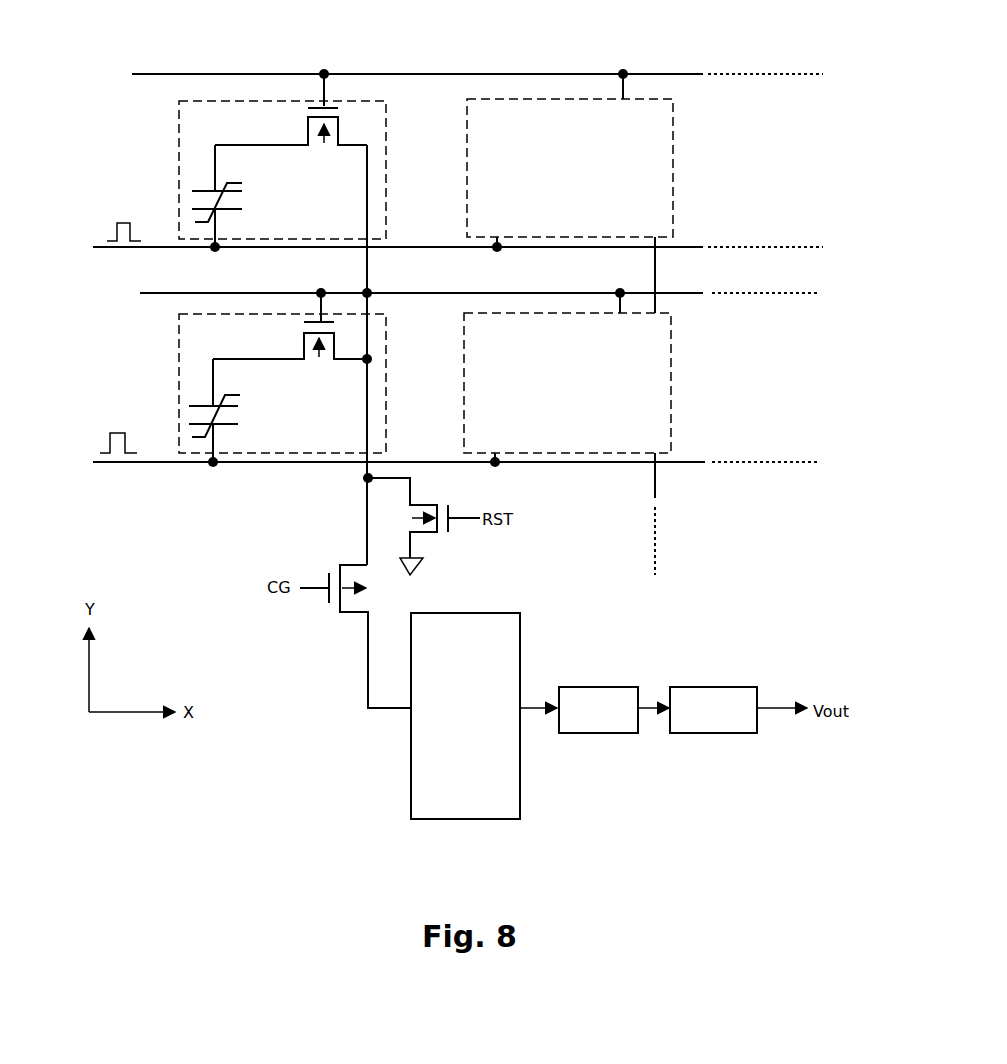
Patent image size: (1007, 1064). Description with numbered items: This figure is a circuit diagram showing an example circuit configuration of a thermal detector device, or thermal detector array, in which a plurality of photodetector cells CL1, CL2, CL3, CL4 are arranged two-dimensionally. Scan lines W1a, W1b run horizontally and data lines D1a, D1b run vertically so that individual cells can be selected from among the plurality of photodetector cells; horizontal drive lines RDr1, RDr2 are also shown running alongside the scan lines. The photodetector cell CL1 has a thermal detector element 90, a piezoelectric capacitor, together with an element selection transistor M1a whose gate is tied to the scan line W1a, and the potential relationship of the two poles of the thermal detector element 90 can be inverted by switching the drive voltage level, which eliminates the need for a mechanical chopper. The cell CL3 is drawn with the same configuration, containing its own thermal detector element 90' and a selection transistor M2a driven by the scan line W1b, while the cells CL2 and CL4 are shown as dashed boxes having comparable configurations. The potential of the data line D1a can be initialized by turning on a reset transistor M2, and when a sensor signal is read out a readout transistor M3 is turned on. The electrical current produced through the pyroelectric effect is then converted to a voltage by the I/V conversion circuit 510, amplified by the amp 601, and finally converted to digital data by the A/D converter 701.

The scan line W1a is at (459, 74).
The scan line W1b is at (461, 292).
The read drive line RDr1 is at (434, 239).
The read drive line RDr2 is at (431, 452).
The photodetector cell CL1 is at (247, 100).
The photodetector cell CL2 is at (526, 100).
The photodetector cell CL3 is at (178, 436).
The photodetector cell CL4 is at (675, 427).
The element selection transistor M1a is at (340, 125).
The select transistor M2a is at (303, 342).
The thermal detector element 90 is at (172, 196).
The ferroelectric capacitor 90' is at (171, 410).
The data line D1a is at (367, 403).
The data line D1b is at (655, 477).
The reset transistor M2 is at (424, 526).
The readout transistor M3 is at (355, 630).
The I/V conversion circuit 510 is at (460, 819).
The amplifier 601 is at (589, 687).
The A/D converter 701 is at (713, 687).